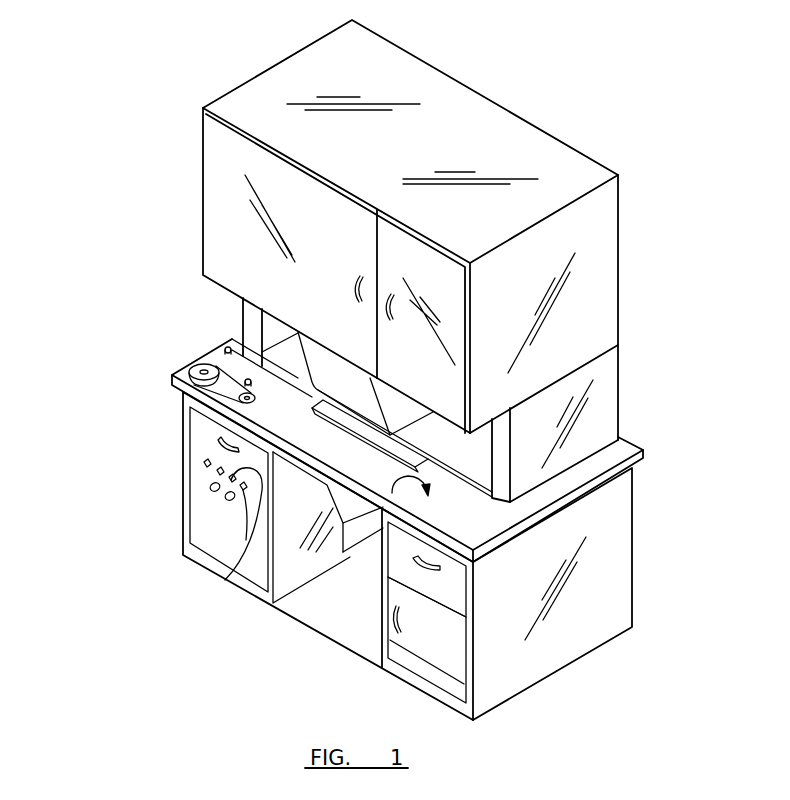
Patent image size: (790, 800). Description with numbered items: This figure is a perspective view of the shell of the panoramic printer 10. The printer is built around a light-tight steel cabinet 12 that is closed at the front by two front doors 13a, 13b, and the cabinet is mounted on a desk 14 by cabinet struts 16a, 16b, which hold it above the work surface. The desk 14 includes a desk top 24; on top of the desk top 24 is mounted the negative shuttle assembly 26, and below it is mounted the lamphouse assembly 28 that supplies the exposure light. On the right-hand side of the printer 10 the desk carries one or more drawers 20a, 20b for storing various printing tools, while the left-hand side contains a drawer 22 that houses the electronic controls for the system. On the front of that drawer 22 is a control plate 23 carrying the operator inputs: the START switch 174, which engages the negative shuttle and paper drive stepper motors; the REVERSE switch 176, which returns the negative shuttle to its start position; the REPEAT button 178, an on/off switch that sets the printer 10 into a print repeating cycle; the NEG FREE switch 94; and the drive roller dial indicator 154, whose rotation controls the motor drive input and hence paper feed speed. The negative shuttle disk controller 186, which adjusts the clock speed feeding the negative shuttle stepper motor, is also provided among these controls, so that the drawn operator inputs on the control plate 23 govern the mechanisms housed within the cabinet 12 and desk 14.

The panoramic printer 10 is at (136, 189).
The light-tight steel cabinet 12 is at (598, 220).
The front door 13a is at (228, 246).
The front door 13b is at (452, 296).
The desk 14 is at (612, 562).
The cabinet strut 16a is at (245, 318).
The cabinet strut 16b is at (600, 408).
The drawer 20a is at (458, 590).
The drawer 20b is at (448, 663).
The drawer 22 is at (210, 543).
The control plate 23 is at (214, 506).
The desk top 24 is at (605, 478).
The negative shuttle assembly 26 is at (392, 520).
The lamphouse assembly 28 is at (367, 560).
The NEG FREE switch 94 is at (225, 580).
The drive roller dial indicator 154 is at (210, 487).
The START switch 174 is at (204, 462).
The REVERSE switch 176 is at (216, 457).
The REPEAT button 178 is at (246, 540).
The negative shuttle disk controller 186 is at (225, 497).